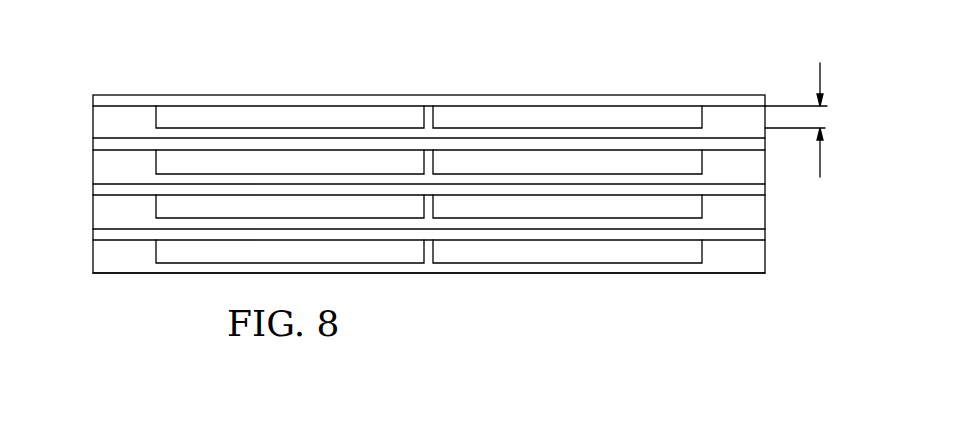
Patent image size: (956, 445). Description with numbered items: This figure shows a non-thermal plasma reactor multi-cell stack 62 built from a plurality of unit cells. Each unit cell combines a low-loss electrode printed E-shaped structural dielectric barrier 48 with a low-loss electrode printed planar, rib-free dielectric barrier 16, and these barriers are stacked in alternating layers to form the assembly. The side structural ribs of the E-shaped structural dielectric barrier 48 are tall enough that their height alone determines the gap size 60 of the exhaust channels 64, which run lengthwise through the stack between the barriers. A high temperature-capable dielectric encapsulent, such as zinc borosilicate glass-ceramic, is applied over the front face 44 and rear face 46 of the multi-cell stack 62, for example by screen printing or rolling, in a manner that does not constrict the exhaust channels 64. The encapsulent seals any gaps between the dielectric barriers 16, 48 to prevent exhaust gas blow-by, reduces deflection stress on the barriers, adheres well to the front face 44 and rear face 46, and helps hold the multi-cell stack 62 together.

The planar dielectric barrier 16 is at (710, 95).
The front face 44 is at (127, 170).
The rear face 46 is at (130, 113).
The E-shaped structural dielectric barrier 48 is at (727, 274).
The gap size of exhaust channels 60 is at (818, 120).
The multi-cell stack 62 is at (528, 312).
The exhaust channels 64 is at (310, 110).